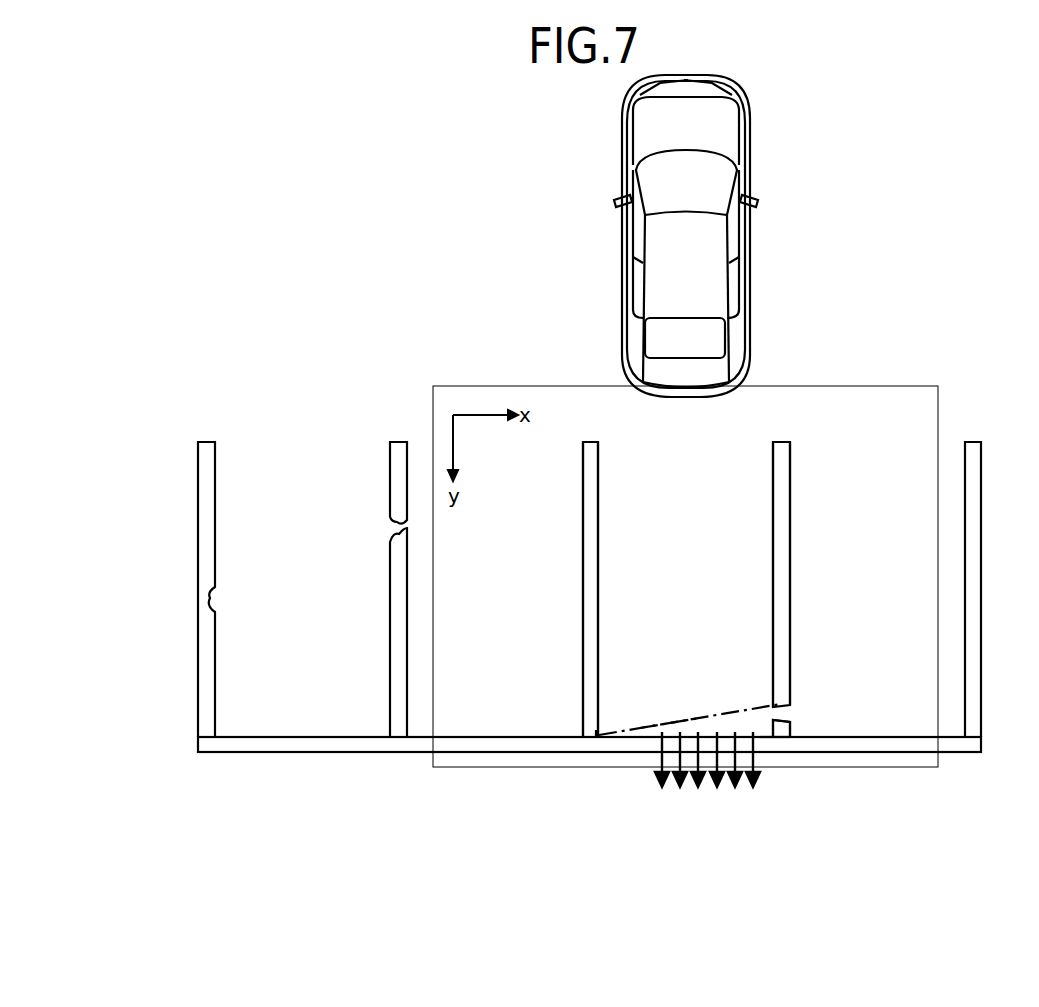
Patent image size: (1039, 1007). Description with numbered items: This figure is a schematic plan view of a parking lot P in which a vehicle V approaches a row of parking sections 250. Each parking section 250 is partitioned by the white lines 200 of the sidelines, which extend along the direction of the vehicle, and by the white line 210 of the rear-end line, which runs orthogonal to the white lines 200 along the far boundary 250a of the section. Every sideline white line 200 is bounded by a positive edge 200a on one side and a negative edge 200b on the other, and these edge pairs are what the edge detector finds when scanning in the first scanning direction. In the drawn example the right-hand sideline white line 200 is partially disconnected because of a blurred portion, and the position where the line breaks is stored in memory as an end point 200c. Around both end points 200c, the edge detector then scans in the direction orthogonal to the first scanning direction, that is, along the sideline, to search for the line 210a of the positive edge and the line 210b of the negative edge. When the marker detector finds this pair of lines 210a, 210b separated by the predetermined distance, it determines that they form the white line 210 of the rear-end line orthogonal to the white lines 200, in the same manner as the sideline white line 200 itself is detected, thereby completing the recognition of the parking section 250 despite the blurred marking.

The white line of sideline 200 is at (202, 738).
The positive edge of white line 200 200a is at (773, 546).
The negative edge of white line 200 200b is at (598, 692).
The end point 200c is at (780, 704).
The white line of rear-end line 210 is at (645, 728).
The line of positive edge 210a is at (708, 735).
The line of negative edge 210b is at (767, 755).
The parking section 250 is at (287, 465).
The boundary of parking section 250a is at (667, 717).
The parking lot P is at (866, 400).
The vehicle V is at (750, 132).